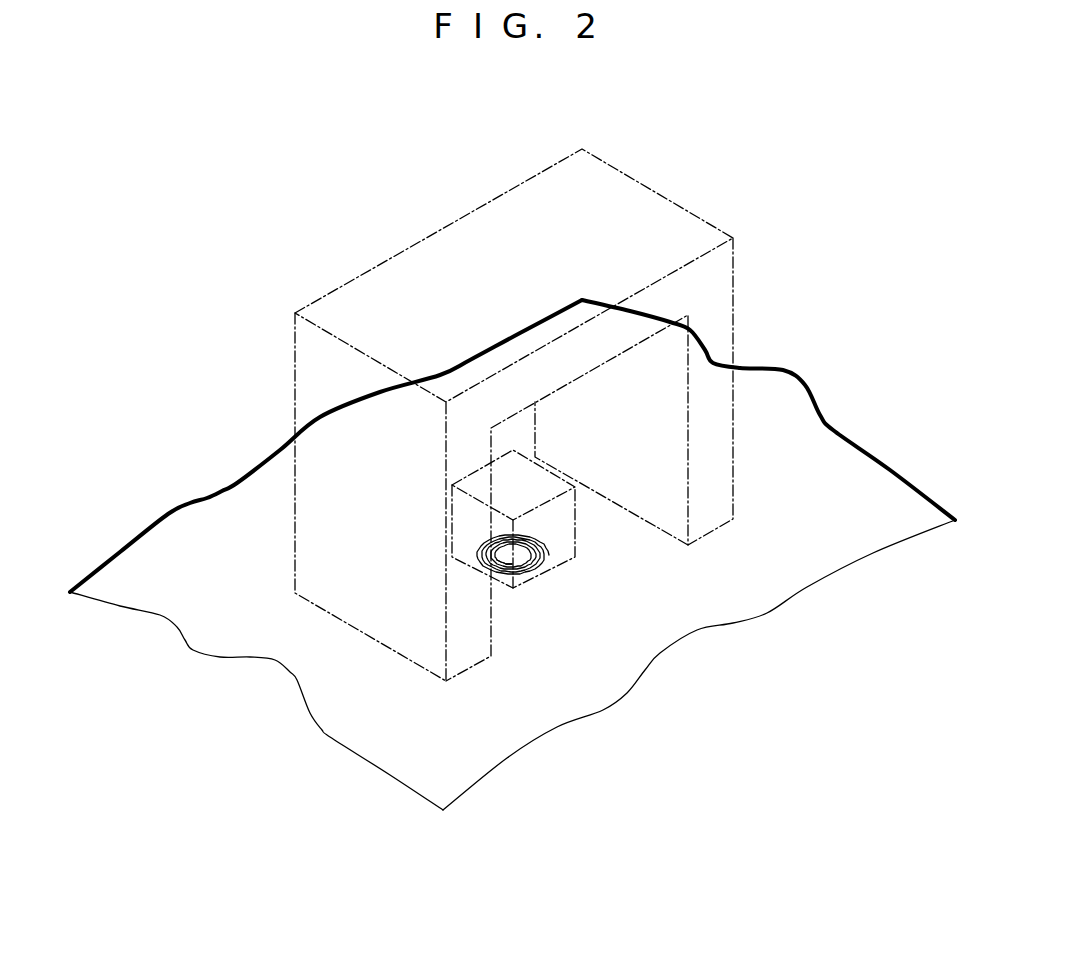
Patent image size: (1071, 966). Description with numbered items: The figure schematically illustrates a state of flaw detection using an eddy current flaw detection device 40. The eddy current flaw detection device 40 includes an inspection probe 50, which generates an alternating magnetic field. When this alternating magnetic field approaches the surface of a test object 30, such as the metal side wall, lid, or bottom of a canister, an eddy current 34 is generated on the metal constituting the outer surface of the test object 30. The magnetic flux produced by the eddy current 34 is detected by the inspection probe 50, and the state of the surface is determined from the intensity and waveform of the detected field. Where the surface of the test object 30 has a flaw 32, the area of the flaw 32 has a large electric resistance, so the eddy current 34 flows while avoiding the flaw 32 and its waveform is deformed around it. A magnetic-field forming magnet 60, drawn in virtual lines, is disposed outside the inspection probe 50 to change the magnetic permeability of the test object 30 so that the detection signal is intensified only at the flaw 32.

The test object 30 is at (845, 490).
The flaw 32 is at (505, 565).
The eddy current 34 is at (552, 556).
The eddy current flaw detection device 40 is at (506, 396).
The inspection probe 50 is at (540, 487).
The magnetic-field forming magnet 60 is at (627, 223).